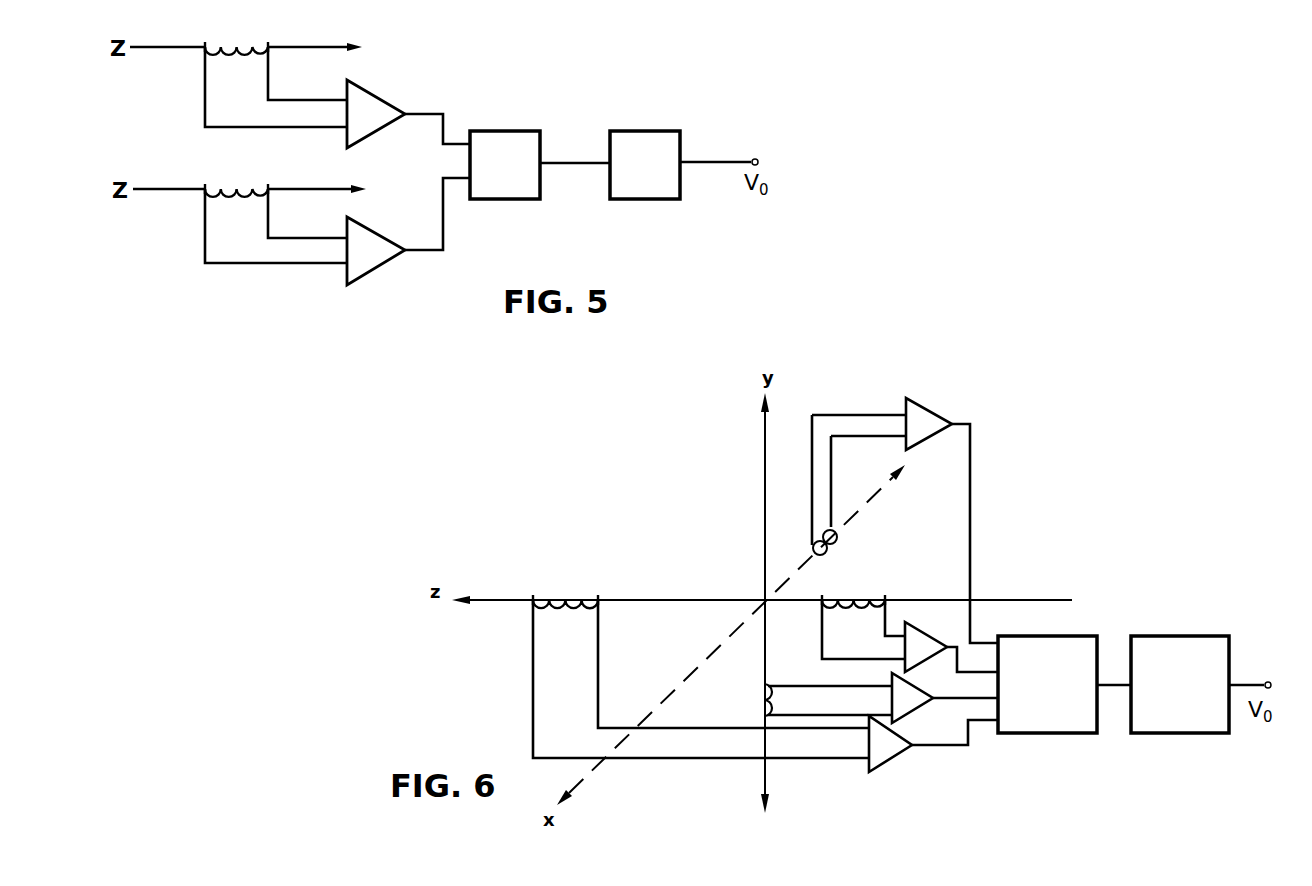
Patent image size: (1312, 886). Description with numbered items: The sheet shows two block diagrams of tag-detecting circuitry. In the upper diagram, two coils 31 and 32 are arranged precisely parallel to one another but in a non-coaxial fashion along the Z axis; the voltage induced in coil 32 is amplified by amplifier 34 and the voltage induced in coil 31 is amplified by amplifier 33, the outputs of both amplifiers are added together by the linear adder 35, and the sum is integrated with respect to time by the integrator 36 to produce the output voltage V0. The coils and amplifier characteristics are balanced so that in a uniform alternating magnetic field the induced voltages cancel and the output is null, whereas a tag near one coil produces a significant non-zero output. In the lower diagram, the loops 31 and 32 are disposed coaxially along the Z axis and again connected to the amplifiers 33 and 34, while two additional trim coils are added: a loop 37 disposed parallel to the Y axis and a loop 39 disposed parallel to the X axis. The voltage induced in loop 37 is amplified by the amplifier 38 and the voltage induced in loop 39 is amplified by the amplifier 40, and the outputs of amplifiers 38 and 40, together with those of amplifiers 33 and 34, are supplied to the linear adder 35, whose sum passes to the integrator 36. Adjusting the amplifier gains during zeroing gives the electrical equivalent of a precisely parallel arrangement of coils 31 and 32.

In FIG. 5, the coil 31 is at (267, 186).
In FIG. 6, the coil 31 is at (588, 596).
In FIG. 5, the coil 32 is at (268, 46).
In FIG. 6, the coil 32 is at (885, 598).
In FIG. 5, the amplifier 33 is at (374, 223).
In FIG. 6, the amplifier 33 is at (902, 733).
In FIG. 5, the amplifier 34 is at (370, 84).
In FIG. 6, the amplifier 34 is at (915, 628).
In FIG. 5, the linear adder 35 is at (503, 131).
In FIG. 6, the linear adder 35 is at (1070, 636).
In FIG. 5, the integrator 36 is at (645, 131).
In FIG. 6, the integrator 36 is at (1160, 636).
In FIG. 6, the loop 37 is at (762, 688).
In FIG. 6, the amplifier 38 is at (910, 680).
In FIG. 6, the loop 39 is at (838, 534).
In FIG. 6, the amplifier 40 is at (930, 401).